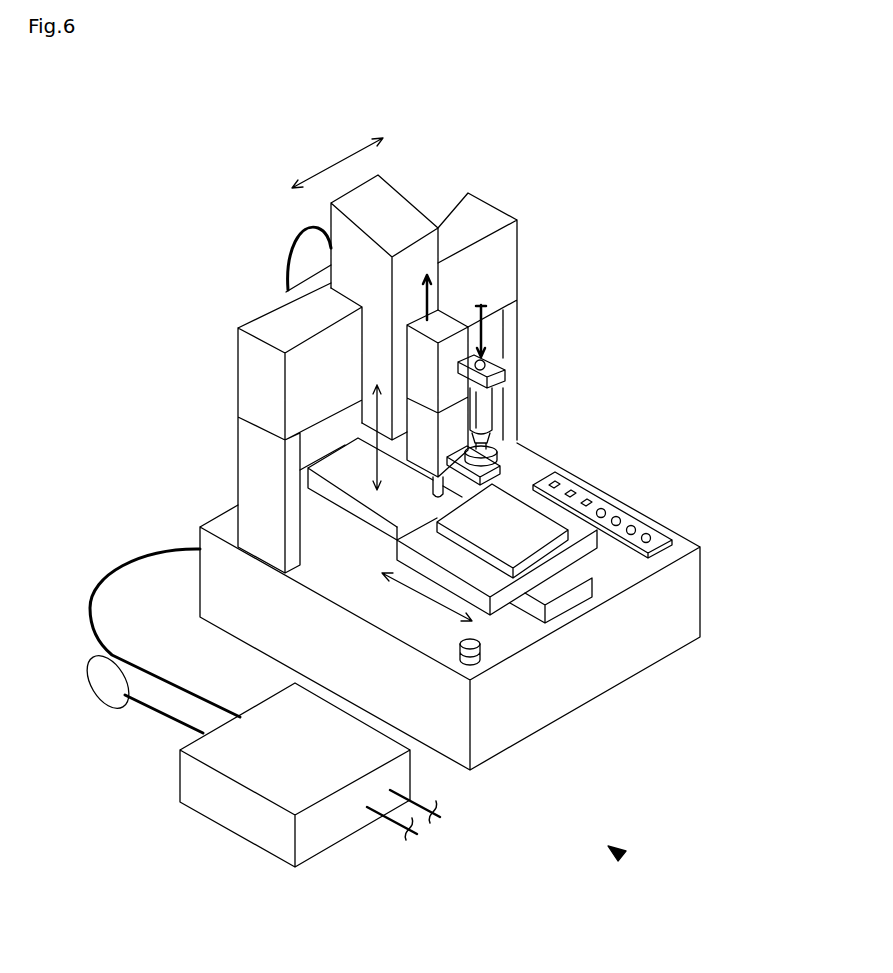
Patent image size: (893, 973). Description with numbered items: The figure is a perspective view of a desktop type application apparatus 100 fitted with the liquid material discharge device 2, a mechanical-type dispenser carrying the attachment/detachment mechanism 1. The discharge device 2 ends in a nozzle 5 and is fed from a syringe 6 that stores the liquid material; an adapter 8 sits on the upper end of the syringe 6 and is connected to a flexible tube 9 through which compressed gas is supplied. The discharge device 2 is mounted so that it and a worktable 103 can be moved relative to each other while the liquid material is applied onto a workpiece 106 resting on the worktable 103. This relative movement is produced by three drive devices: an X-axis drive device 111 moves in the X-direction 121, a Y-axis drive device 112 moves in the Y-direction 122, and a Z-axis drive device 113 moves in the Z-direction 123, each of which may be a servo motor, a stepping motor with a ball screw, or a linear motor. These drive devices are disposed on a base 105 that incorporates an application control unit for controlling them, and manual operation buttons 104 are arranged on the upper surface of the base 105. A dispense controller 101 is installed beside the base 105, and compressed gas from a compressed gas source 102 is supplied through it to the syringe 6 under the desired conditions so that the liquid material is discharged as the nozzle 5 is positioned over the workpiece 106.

The attachment/detachment mechanism 1 is at (578, 433).
The liquid material discharge device 2 is at (518, 332).
The nozzle 5 is at (287, 491).
The syringe 6 is at (581, 400).
The adapter 8 is at (581, 360).
The flexible tube 9 is at (572, 313).
The desktop type application apparatus 100 is at (664, 876).
The dispense controller 101 is at (310, 810).
The compressed gas source 102 is at (124, 728).
The worktable 103 is at (597, 608).
The manual operation buttons 104 is at (636, 501).
The base 105 is at (511, 606).
The workpiece 106 is at (671, 512).
The X-axis drive device 111 is at (239, 413).
The Y-axis drive device 112 is at (552, 644).
The Z-axis drive device 113 is at (450, 280).
The X-direction 121 is at (322, 131).
The Y-direction 122 is at (517, 687).
The Z-direction 123 is at (231, 435).